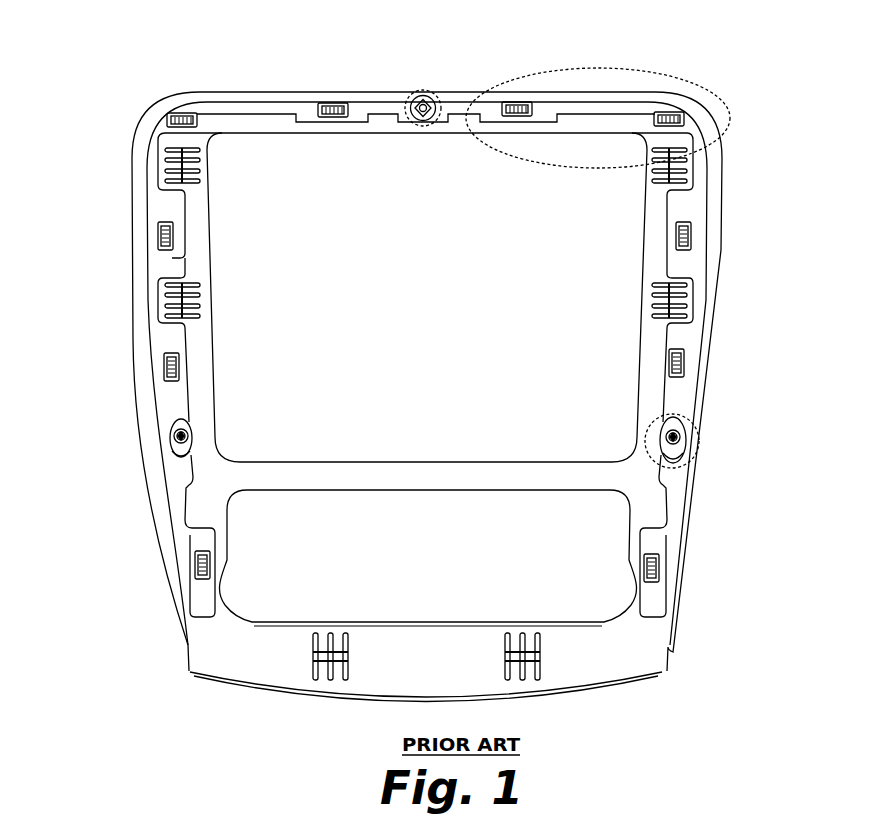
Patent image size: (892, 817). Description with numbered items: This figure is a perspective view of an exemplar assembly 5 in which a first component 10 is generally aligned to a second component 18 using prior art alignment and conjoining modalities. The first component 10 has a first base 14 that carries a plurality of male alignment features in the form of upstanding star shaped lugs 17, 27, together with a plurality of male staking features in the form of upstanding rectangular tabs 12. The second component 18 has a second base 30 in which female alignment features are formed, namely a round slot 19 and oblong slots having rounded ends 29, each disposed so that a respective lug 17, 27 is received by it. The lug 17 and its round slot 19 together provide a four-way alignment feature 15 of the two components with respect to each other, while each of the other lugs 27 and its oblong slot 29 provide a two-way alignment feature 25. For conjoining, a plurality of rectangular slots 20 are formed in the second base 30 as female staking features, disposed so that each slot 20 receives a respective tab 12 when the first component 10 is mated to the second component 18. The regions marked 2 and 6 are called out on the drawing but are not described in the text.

The detail region of the console 2 is at (628, 66).
The assembly 5 is at (434, 88).
The detail region of fastener 6 is at (684, 402).
The first component 10 is at (227, 685).
The rectangular tab 12 is at (197, 128).
The first base 14 is at (343, 478).
The four-way alignment feature 15 is at (418, 90).
The star shaped lug 17 is at (421, 124).
The second component 18 is at (158, 580).
The round slot 19 is at (428, 124).
The rectangular slot 20 is at (194, 130).
The two-way alignment feature 25 is at (167, 423).
The star shaped lug 27 is at (188, 433).
The oblong slot having rounded ends 29 is at (190, 455).
The second base 30 is at (175, 470).